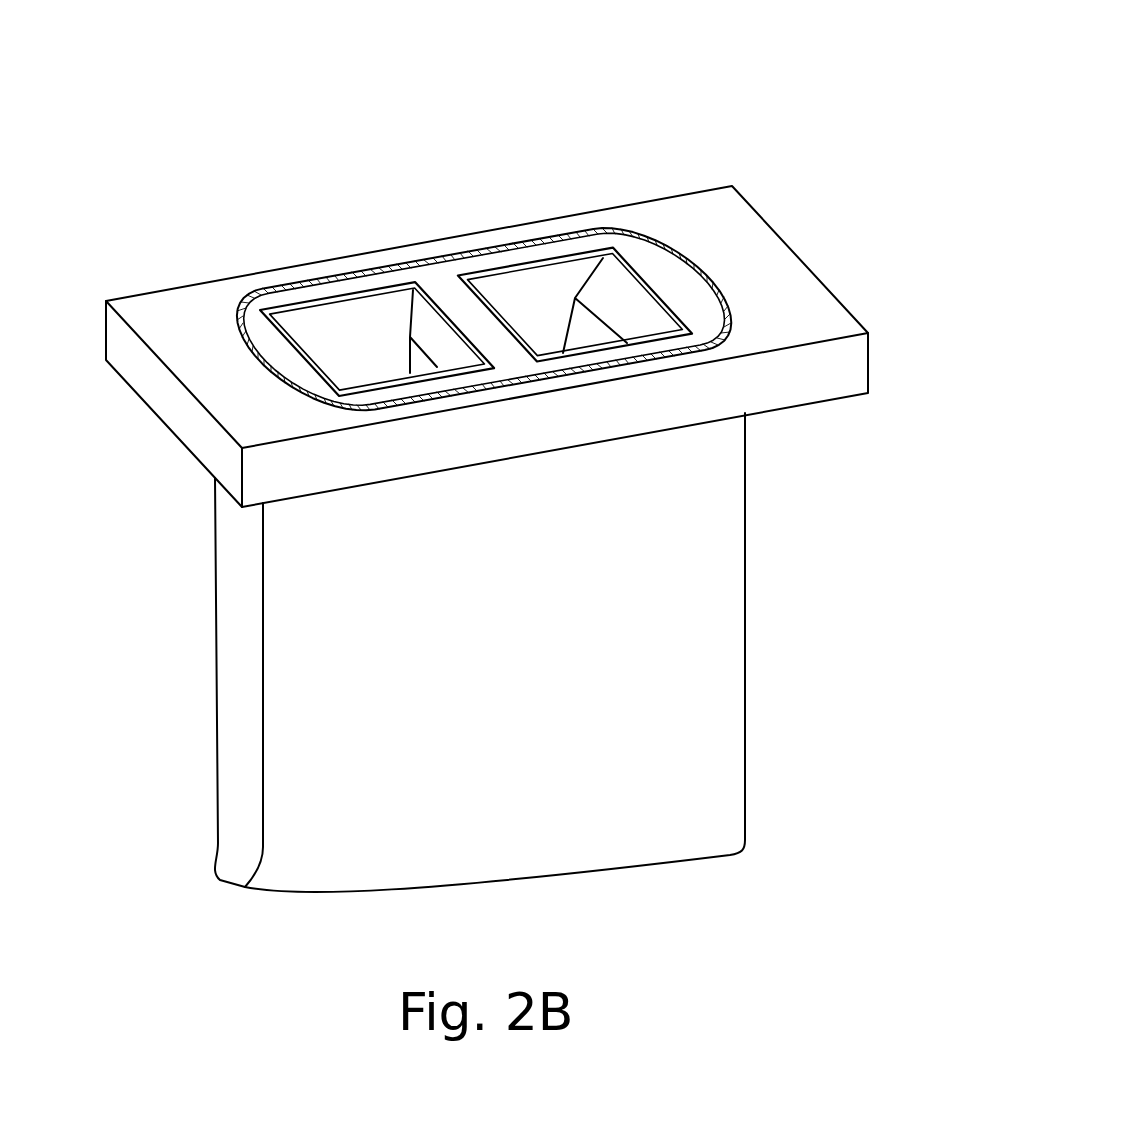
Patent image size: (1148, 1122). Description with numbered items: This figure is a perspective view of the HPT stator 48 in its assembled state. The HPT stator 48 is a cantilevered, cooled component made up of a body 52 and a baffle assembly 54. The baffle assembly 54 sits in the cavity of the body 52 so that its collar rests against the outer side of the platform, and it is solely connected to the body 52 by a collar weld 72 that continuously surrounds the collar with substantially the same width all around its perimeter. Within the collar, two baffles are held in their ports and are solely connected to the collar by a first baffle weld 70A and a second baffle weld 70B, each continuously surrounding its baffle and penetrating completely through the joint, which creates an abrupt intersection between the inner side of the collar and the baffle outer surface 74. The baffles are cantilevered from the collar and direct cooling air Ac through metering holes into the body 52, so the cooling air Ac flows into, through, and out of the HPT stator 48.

The HPT stator 48 is at (782, 131).
The body 52 is at (167, 437).
The baffle assembly 54 is at (732, 313).
The collar weld 72 is at (402, 262).
The baffle outer surface 74 is at (172, 310).
The first baffle weld 70A is at (292, 306).
The second baffle weld 70B is at (568, 256).
The cooling air Ac is at (553, 312).